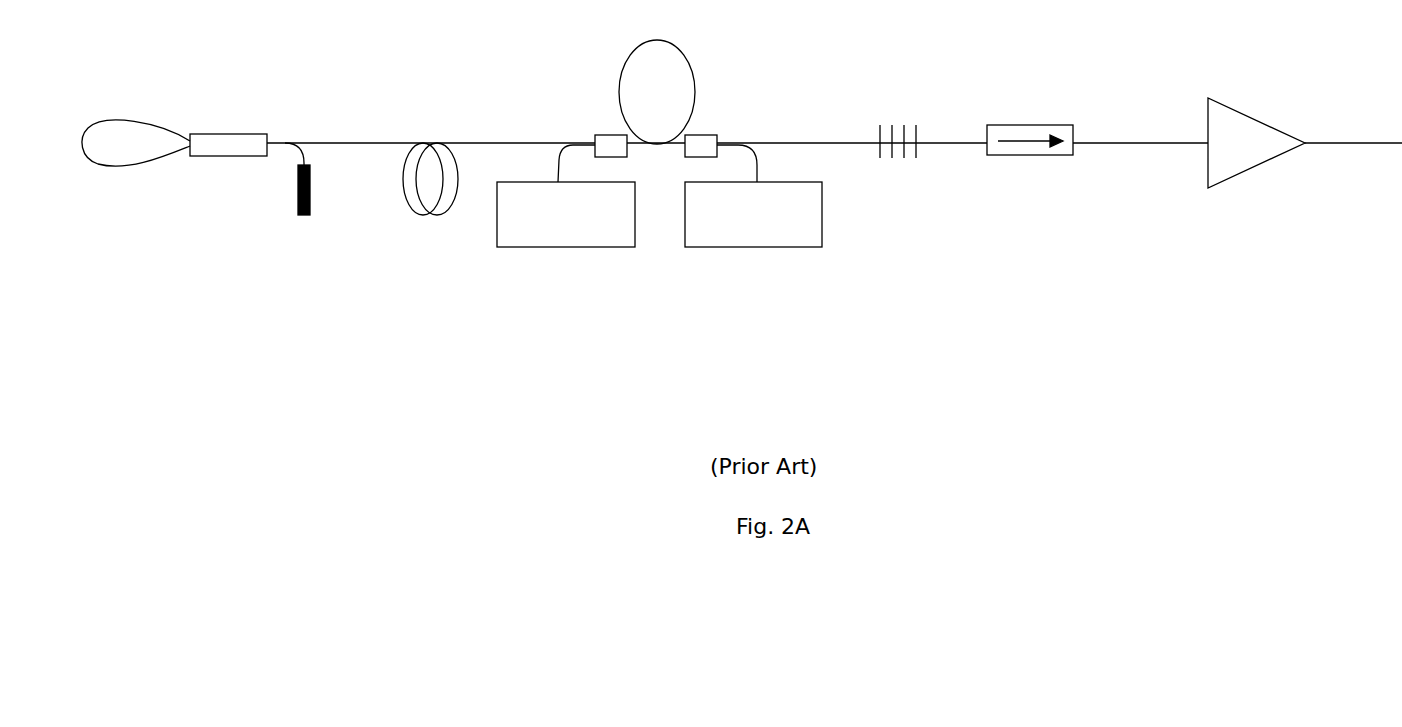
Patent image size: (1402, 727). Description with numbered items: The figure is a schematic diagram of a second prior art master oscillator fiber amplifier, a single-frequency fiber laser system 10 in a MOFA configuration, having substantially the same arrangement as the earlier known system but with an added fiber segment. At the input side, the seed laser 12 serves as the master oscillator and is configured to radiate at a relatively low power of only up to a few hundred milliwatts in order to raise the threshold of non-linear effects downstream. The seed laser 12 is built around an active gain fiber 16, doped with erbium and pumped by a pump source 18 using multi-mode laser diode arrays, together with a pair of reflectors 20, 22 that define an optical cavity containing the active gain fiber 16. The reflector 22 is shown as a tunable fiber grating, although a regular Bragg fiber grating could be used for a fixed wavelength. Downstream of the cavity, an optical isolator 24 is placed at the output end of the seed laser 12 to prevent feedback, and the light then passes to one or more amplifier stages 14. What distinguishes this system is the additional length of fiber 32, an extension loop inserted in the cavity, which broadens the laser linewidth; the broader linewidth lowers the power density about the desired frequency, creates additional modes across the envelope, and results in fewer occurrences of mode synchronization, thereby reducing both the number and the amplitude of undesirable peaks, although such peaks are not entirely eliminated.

The single-frequency fiber laser system 10 is at (834, 239).
The seed laser 12 is at (354, 124).
The amplifier stage 14 is at (1285, 113).
The active gain fiber 16 is at (717, 68).
The pump source 18 is at (694, 274).
The reflector 20 is at (205, 122).
The reflector 22 is at (899, 187).
The optical isolator 24 is at (1041, 112).
The additional length of fiber 32 is at (441, 122).